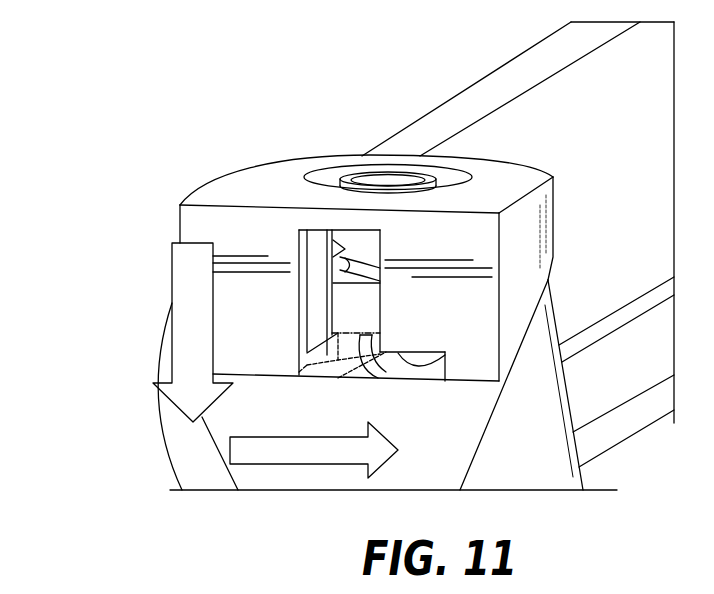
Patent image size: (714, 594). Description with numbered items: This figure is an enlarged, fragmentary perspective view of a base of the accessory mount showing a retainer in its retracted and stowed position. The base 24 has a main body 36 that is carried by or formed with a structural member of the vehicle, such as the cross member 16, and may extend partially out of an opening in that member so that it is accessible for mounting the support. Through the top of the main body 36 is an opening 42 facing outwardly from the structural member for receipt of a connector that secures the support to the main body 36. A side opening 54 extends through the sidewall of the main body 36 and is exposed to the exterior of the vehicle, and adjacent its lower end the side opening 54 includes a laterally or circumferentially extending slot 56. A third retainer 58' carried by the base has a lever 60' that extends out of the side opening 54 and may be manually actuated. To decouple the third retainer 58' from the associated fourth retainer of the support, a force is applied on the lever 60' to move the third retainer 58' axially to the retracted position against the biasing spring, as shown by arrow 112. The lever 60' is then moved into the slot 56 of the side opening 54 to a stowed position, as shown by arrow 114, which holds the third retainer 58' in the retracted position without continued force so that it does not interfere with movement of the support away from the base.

The cross member 16 is at (572, 107).
The first base 24 is at (261, 150).
The main body 36 is at (247, 240).
The opening 42 is at (383, 177).
The side opening 54 is at (380, 284).
The slot 56 is at (418, 358).
The third retainer 58' is at (347, 446).
The lever 60' is at (454, 413).
The arrow 112 is at (180, 350).
The arrow 114 is at (262, 455).